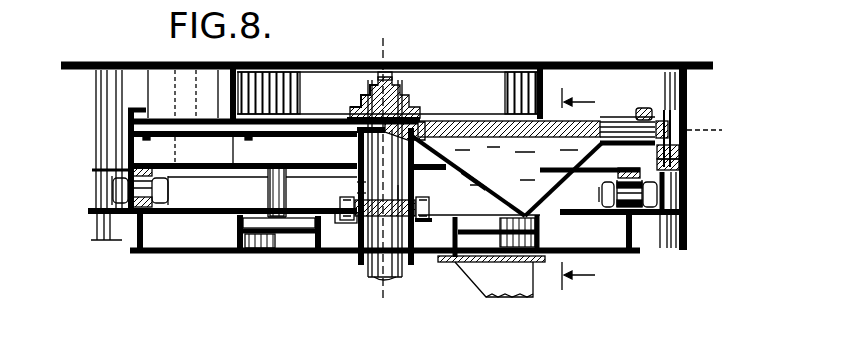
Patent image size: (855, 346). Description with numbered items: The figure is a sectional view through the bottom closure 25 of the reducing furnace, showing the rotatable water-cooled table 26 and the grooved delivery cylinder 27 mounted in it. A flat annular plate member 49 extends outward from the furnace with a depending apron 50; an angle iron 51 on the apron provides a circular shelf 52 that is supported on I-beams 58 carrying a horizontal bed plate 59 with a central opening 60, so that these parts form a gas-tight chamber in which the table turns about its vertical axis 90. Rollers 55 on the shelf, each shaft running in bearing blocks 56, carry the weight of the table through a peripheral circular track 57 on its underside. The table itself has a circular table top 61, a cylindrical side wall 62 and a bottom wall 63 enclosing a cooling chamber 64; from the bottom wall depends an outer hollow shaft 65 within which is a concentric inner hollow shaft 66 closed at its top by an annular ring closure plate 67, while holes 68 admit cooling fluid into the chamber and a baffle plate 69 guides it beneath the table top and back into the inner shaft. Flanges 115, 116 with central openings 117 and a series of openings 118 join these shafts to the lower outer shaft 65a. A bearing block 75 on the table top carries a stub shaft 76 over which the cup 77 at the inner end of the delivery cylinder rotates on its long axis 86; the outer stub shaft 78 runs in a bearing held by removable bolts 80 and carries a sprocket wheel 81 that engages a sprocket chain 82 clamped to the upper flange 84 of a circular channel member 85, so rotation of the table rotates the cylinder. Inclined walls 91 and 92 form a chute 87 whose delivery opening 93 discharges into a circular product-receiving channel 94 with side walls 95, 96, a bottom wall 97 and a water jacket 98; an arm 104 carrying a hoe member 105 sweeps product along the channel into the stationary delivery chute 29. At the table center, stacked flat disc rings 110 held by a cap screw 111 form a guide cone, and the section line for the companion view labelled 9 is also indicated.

The bottom closure 25 is at (83, 117).
The rotatable water-cooled table 26 is at (171, 119).
The delivery cylinder 27 is at (498, 121).
The stationary delivery chute 29 is at (524, 265).
The annular plate member 49 is at (620, 62).
The apron portion 50 is at (687, 97).
The angle iron 51 is at (679, 243).
The circular shelf 52 is at (108, 226).
The rollers 55 is at (641, 212).
The bearing blocks 56 is at (679, 187).
The peripheral circular track 57 is at (90, 172).
The I-beams 58 is at (626, 235).
The bed plate 59 is at (185, 253).
The central opening 60 is at (374, 268).
The table top 61 is at (205, 118).
The cylindrical side wall 62 is at (130, 109).
The bottom wall 63 is at (222, 194).
The chamber 64 is at (244, 149).
The outer hollow shaft 65 is at (357, 194).
The outer shaft 65a is at (414, 264).
The inner hollow shaft 66 is at (357, 182).
The annular ring closure plate 67 is at (384, 196).
The holes 68 is at (357, 159).
The baffle plate 69 is at (263, 151).
The bearing block 75 is at (406, 101).
The stub shaft 76 is at (416, 119).
The cup 77 is at (412, 136).
The stub shaft 78 is at (611, 122).
The removable bolts 80 is at (650, 108).
The sprocket wheel 81 is at (668, 110).
The sprocket chain 82 is at (687, 149).
The upper flange 84 is at (687, 168).
The channel member 85 is at (670, 196).
The long axis 86 is at (689, 124).
The chute 87 is at (516, 166).
The vertical axis 90 is at (386, 47).
The wall 91 is at (446, 176).
The wall 92 is at (565, 178).
The delivery opening 93 is at (466, 180).
The product-receiving channel 94 is at (540, 234).
The side wall 95 is at (240, 220).
The side wall 96 is at (350, 224).
The bottom wall 97 is at (257, 252).
The water jacket 98 is at (300, 240).
The arm 104 is at (268, 193).
The hoe member 105 is at (276, 238).
The flat disc rings 110 is at (362, 99).
The cap screw 111 is at (380, 77).
The flange 115 is at (420, 206).
The flange 116 is at (433, 225).
The central openings 117 is at (400, 196).
The openings 118 is at (362, 252).
The section line 9- 9 is at (578, 192).